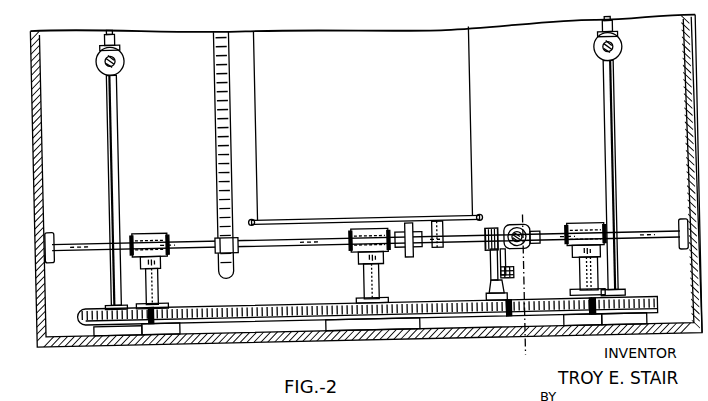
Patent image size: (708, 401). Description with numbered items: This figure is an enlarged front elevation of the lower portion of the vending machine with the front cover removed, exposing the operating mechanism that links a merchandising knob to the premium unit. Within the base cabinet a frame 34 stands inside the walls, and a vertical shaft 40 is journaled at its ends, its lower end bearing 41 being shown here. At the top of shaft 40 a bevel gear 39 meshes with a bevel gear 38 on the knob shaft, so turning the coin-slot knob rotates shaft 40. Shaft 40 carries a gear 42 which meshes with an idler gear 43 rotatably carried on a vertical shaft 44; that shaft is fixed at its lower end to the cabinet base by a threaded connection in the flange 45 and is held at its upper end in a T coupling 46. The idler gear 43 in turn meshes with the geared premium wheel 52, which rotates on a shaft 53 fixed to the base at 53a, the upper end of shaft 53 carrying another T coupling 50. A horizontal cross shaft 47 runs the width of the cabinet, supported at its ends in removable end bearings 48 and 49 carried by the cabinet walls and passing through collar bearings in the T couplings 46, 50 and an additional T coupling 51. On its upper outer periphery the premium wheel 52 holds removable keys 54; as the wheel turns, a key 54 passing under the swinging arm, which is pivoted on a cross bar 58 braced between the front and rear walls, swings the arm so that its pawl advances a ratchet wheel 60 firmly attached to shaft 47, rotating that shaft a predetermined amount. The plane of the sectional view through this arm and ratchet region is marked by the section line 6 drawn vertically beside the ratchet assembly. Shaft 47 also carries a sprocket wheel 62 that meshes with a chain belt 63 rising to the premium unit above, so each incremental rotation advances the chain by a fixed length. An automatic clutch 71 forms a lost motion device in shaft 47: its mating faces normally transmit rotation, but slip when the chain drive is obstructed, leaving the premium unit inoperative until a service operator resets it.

The section line 6- 6 is at (500, 223).
The frame 34 is at (476, 91).
The bevel gear 38 is at (615, 61).
The bevel gear 39 is at (625, 38).
The vertical shaft 40 is at (626, 99).
The lower end bearing 41 is at (625, 331).
The gear 42 is at (639, 304).
The idler gear 43 is at (544, 305).
The vertical shaft 44 is at (595, 278).
The flange 45 is at (588, 331).
The T coupling 46 is at (584, 229).
The cross shaft 47 is at (288, 238).
The removable end bearing 48 is at (682, 229).
The removable end bearing 49 is at (52, 230).
The T coupling 50 is at (372, 230).
The T coupling 51 is at (152, 230).
The geared premium wheel 52 is at (289, 303).
The shaft 53 is at (361, 279).
The base fixing 53a is at (379, 326).
The key 54 is at (486, 295).
The cross bar 58 is at (513, 273).
The ratchet wheel 60 is at (486, 249).
The sprocket wheel 62 is at (215, 262).
The chain belt 63 is at (218, 97).
The automatic clutch 71 is at (409, 225).